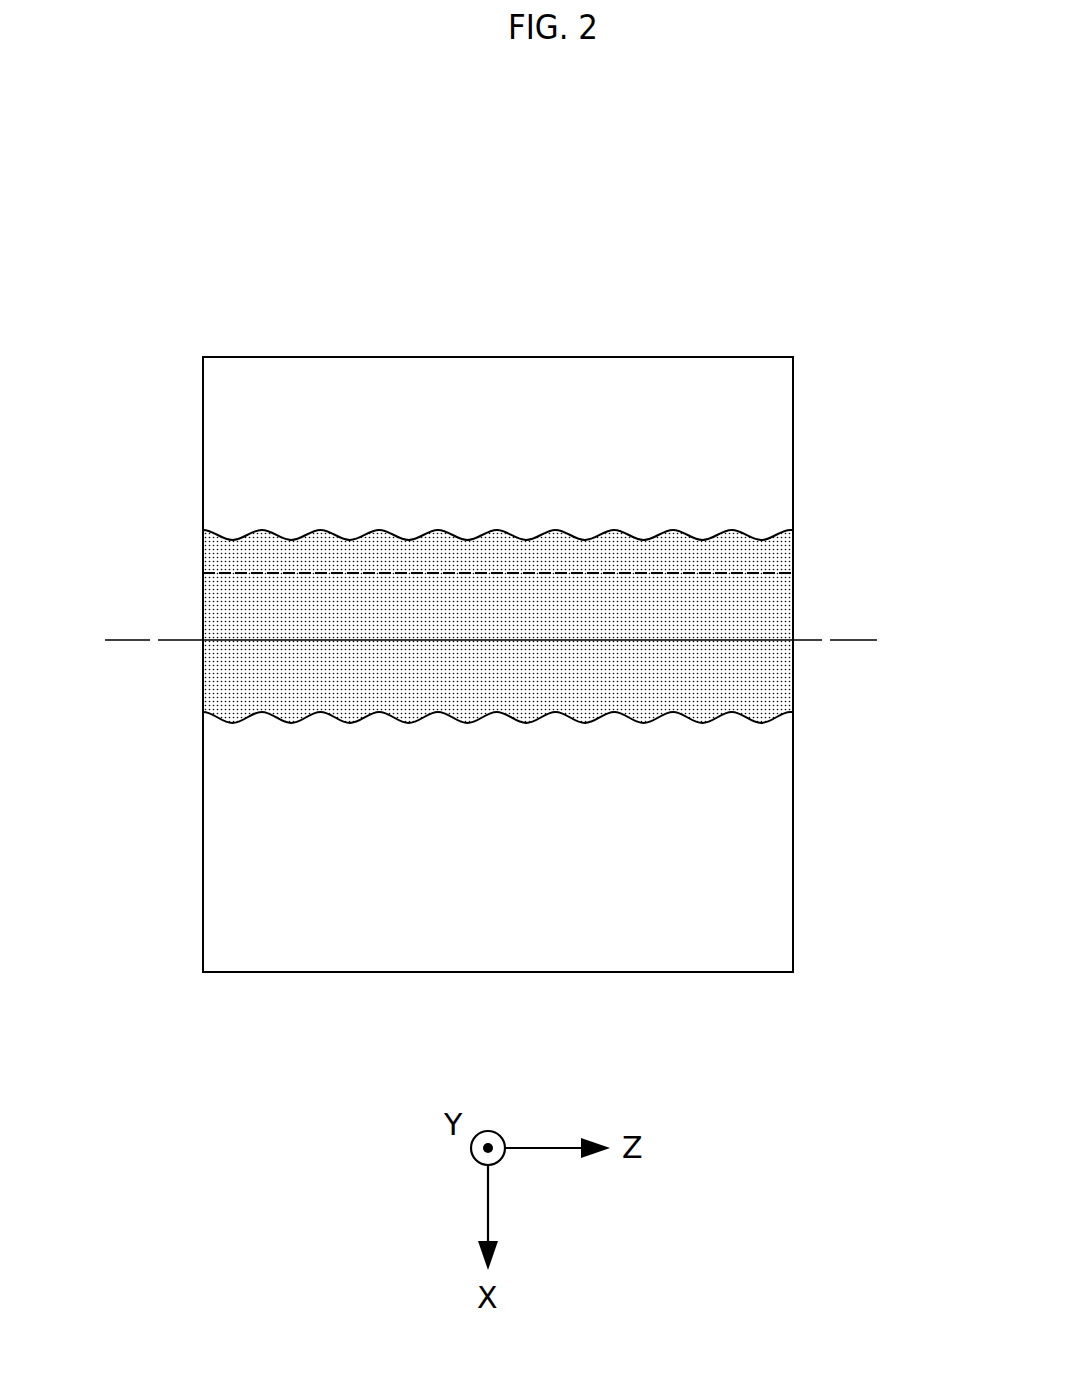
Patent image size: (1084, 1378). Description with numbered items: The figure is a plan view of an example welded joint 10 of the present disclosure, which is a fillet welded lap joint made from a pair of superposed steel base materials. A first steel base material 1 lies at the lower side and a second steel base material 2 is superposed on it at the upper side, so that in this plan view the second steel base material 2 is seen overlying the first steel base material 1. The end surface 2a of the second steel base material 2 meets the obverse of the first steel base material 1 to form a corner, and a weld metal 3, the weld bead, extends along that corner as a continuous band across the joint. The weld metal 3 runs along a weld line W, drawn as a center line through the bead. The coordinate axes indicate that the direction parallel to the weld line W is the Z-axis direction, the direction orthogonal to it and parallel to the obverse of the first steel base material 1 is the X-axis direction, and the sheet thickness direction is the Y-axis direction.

The welded joint 10 is at (528, 280).
The first steel base material 1 is at (793, 830).
The second steel base material 2 is at (793, 441).
The end surface of the second steel base material 2a is at (728, 576).
The weld metal 3 is at (262, 547).
The weld line W is at (148, 640).